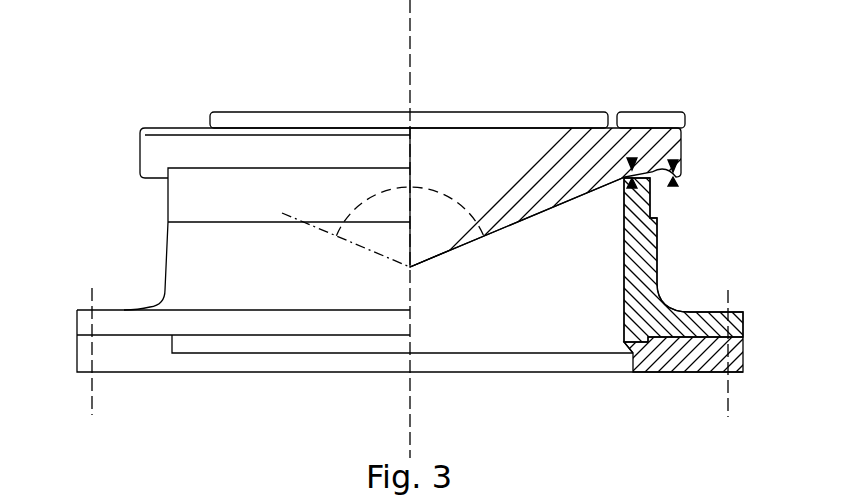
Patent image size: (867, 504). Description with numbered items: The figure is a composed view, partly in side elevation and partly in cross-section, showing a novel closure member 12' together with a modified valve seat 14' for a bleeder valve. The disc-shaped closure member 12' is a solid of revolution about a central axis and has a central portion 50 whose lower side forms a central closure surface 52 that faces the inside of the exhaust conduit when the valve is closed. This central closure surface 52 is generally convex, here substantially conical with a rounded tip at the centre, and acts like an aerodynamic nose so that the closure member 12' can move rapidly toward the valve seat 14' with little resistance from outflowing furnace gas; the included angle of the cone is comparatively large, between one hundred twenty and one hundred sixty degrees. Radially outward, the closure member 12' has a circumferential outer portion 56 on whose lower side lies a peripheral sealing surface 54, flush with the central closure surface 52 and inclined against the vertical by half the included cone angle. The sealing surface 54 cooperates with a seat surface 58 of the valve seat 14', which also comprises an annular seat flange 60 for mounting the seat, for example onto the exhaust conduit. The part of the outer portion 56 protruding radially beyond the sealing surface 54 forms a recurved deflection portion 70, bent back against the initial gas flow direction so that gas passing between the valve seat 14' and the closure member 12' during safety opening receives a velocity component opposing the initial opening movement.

The closure member 12' is at (410, 217).
The valve seat 14' is at (683, 200).
The central portion 50 is at (424, 114).
The central closure surface 52 is at (456, 251).
The peripheral sealing surface 54 is at (633, 148).
The circumferential outer portion 56 is at (650, 112).
The seat surface 58 is at (653, 203).
The annular seat flange 60 is at (167, 258).
The recurved deflection portion 70 is at (682, 162).